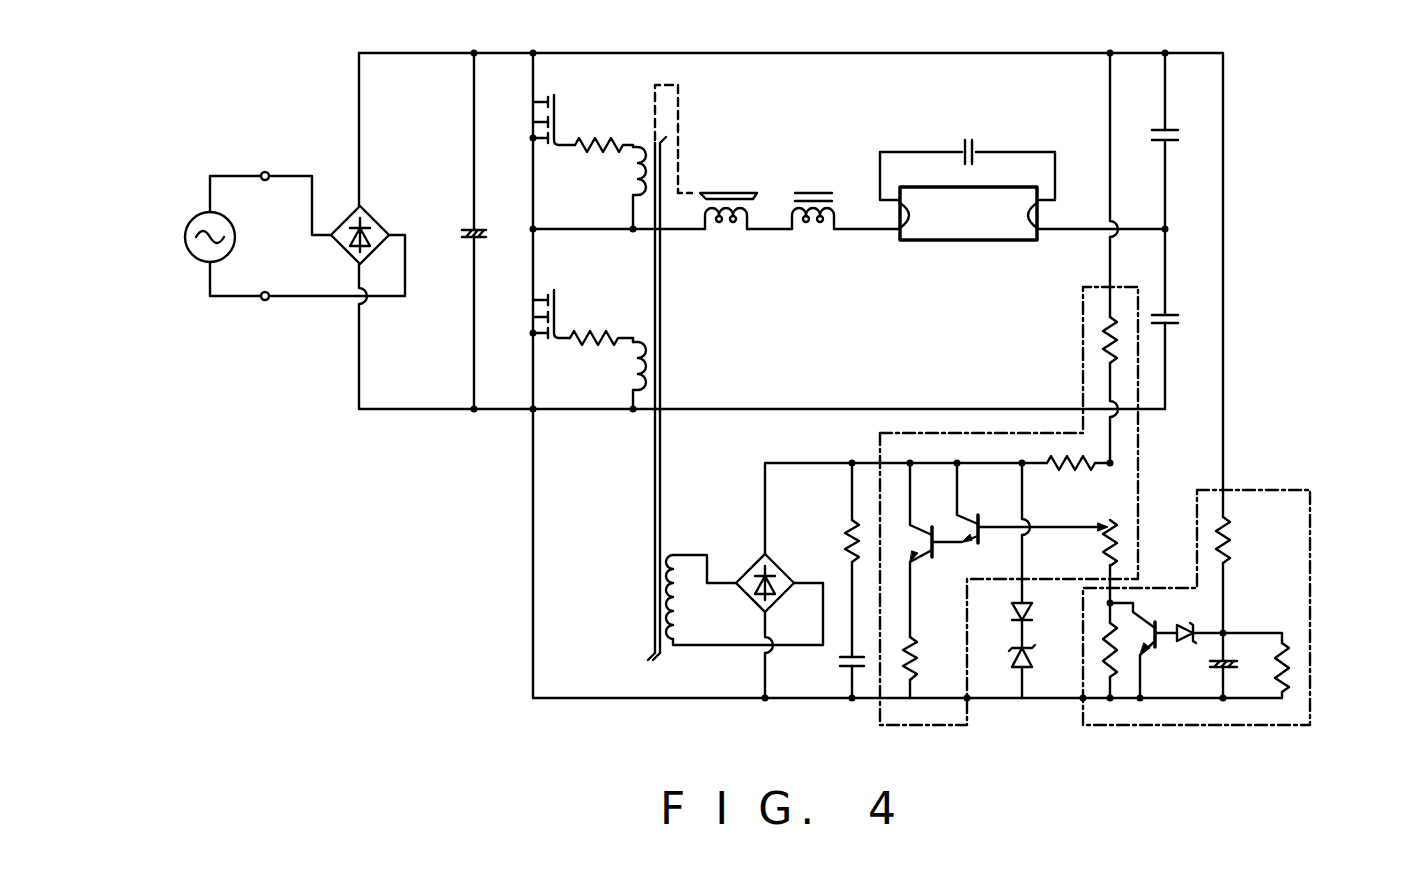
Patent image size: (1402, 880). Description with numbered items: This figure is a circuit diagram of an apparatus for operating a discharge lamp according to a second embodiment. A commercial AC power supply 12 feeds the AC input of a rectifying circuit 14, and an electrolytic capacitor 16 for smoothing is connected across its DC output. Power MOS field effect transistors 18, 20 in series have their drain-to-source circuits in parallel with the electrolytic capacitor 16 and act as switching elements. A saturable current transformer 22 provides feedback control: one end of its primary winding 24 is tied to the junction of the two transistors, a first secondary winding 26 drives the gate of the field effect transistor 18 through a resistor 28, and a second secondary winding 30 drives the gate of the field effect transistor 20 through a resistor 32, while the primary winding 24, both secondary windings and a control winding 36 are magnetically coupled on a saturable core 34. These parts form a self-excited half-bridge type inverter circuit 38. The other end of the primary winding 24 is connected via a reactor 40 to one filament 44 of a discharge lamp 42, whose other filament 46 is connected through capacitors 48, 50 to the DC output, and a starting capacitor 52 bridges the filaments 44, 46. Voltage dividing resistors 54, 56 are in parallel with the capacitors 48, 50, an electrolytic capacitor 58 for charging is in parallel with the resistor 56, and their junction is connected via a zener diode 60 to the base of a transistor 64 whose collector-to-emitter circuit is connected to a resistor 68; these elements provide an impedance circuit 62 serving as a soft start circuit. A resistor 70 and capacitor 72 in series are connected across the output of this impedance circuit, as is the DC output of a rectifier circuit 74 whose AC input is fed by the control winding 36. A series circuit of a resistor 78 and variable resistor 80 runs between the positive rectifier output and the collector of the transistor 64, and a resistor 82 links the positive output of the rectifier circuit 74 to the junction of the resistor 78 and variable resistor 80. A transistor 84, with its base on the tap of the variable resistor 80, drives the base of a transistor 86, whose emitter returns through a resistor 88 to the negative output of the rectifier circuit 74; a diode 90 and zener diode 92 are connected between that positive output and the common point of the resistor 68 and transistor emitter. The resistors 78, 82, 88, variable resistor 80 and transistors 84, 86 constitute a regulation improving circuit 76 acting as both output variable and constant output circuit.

The commercial AC power supply 12 is at (192, 222).
The rectifying circuit 14 is at (380, 220).
The electrolytic capacitor 16 is at (462, 233).
The field effect transistor 18 is at (557, 104).
The field effect transistor 20 is at (558, 299).
The saturable current transformer 22 is at (652, 400).
The primary winding 24 is at (727, 230).
The first secondary winding 26 is at (632, 180).
The resistor 28 is at (593, 141).
The second secondary winding 30 is at (632, 377).
The resistor 32 is at (598, 334).
The saturable core 34 is at (663, 505).
The control winding 36 is at (676, 624).
The self-excited half-bridge type inverter circuit 38 is at (640, 112).
The reactor 40 is at (813, 230).
The discharge lamp 42 is at (966, 241).
The filament 44 is at (910, 233).
The filament 46 is at (1026, 233).
The capacitor 48 is at (1152, 136).
The capacitor 50 is at (1166, 306).
The starting capacitor 52 is at (963, 147).
The voltage dividing resistor 54 is at (1229, 541).
The voltage dividing resistor 56 is at (1289, 678).
The electrolytic capacitor 58 is at (1238, 660).
The zener diode 60 is at (1186, 641).
The impedance circuit 62 is at (1250, 490).
The transistor 64 is at (1150, 616).
The resistor 68 is at (1107, 656).
The resistor 70 is at (845, 546).
The capacitor 72 is at (840, 666).
The rectifier circuit 74 is at (752, 567).
The regulation improving circuit 76 is at (906, 726).
The resistor 78 is at (1103, 331).
The variable resistor 80 is at (1108, 532).
The resistor 82 is at (1070, 466).
The transistor 84 is at (978, 518).
The transistor 86 is at (932, 528).
The resistor 88 is at (918, 648).
The diode 90 is at (1030, 613).
The zener diode 92 is at (1045, 630).